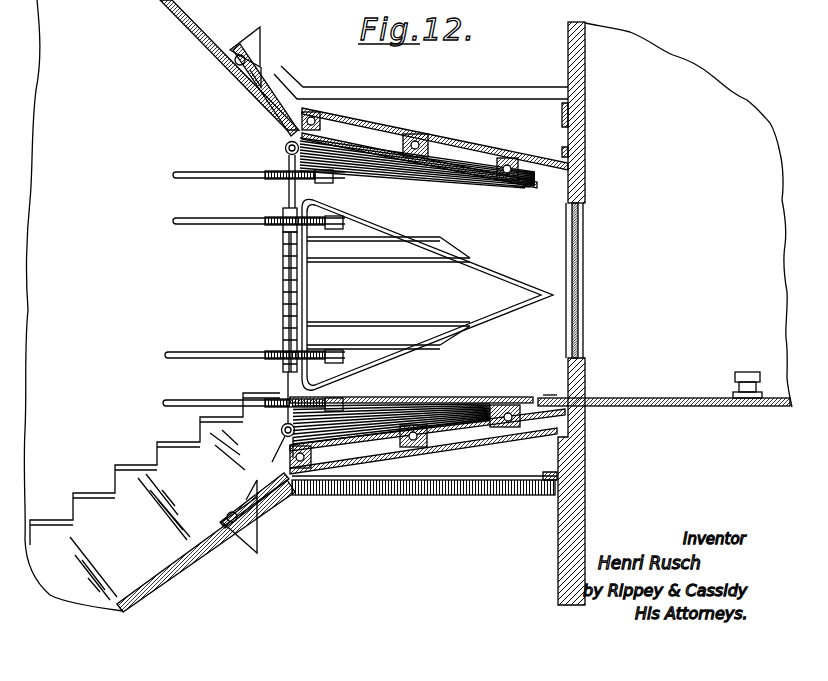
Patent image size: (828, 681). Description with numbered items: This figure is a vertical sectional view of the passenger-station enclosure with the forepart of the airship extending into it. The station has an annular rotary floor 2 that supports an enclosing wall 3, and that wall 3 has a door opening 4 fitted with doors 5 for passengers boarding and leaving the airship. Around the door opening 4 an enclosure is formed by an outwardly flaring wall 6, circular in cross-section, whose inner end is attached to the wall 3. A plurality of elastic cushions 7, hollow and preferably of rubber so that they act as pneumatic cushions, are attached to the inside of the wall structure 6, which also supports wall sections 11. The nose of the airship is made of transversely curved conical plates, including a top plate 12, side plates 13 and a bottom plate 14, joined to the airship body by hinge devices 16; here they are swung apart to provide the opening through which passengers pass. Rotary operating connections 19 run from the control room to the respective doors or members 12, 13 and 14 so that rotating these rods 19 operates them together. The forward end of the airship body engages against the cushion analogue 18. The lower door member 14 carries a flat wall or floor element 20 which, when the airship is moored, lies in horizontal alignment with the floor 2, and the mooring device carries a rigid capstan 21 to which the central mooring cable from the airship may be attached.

The annular rotary floor 2 is at (668, 400).
The enclosing wall 3 is at (580, 117).
The door opening 4 is at (560, 380).
The doors 5 is at (576, 297).
The outwardly flaring wall 6 is at (487, 148).
The elastic cushions 7 is at (403, 140).
The wall sections 11 is at (125, 480).
The top plate 12 is at (484, 180).
The side plates 13 is at (492, 284).
The bottom plate 14 is at (460, 425).
The hinge devices 16 is at (286, 148).
The elastic cushion analogue 18 is at (235, 50).
The rotary operating connections 19 is at (218, 220).
The flat wall or floor element 20 is at (425, 398).
The rigid capstan 21 is at (748, 372).